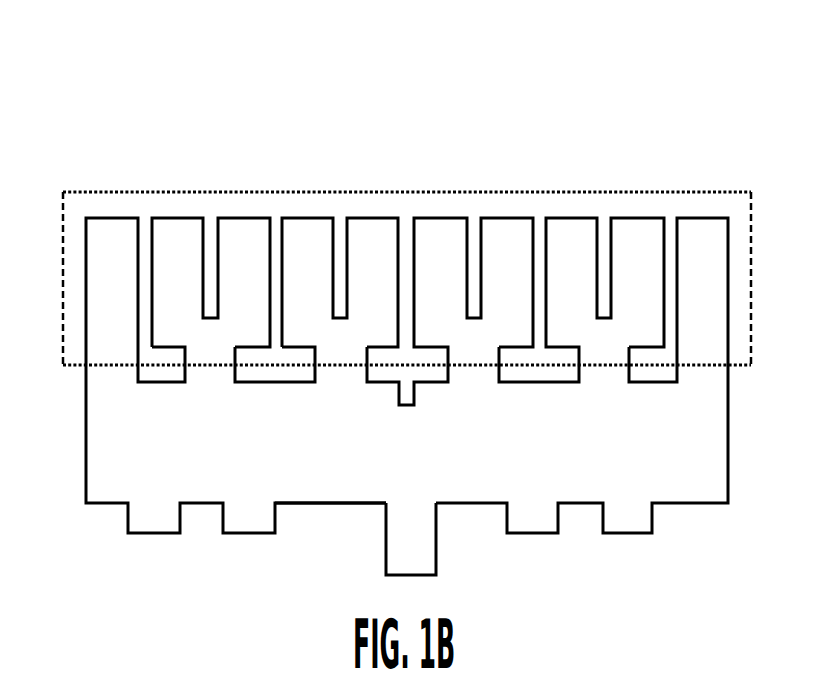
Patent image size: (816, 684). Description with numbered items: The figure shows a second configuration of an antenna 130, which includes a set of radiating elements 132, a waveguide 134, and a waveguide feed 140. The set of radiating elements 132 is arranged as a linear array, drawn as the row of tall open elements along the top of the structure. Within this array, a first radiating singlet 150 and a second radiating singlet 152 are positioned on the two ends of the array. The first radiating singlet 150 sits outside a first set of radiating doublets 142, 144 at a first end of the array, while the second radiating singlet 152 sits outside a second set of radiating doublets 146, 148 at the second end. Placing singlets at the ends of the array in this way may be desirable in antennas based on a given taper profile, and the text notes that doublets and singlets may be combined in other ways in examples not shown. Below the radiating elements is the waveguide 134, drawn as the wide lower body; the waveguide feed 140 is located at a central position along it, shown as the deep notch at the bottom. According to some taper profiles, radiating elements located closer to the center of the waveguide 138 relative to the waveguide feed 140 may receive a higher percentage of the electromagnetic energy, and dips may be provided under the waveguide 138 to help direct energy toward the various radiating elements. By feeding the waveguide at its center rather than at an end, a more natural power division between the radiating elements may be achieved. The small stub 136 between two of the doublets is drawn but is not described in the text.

The antenna 130 is at (170, 120).
The set of radiating elements 132 is at (62, 262).
The waveguide 134 is at (86, 450).
The stub 136 is at (290, 382).
The waveguide 138 is at (315, 503).
The waveguide feed 140 is at (436, 563).
The radiating doublet 142 is at (240, 218).
The radiating doublet 144 is at (370, 218).
The radiating doublet 146 is at (437, 218).
The radiating doublet 148 is at (572, 218).
The first radiating singlet 150 is at (110, 218).
The second radiating singlet 152 is at (703, 218).